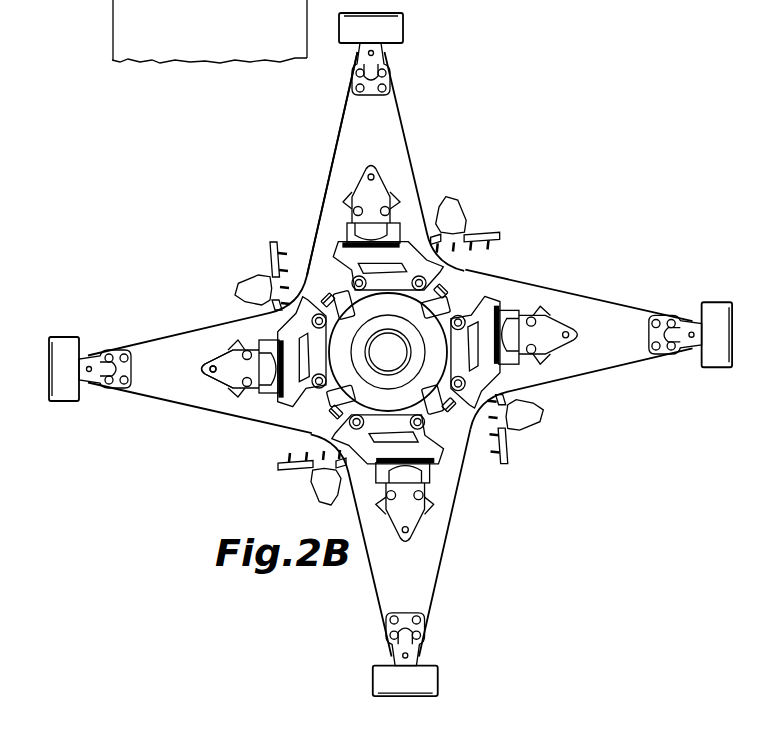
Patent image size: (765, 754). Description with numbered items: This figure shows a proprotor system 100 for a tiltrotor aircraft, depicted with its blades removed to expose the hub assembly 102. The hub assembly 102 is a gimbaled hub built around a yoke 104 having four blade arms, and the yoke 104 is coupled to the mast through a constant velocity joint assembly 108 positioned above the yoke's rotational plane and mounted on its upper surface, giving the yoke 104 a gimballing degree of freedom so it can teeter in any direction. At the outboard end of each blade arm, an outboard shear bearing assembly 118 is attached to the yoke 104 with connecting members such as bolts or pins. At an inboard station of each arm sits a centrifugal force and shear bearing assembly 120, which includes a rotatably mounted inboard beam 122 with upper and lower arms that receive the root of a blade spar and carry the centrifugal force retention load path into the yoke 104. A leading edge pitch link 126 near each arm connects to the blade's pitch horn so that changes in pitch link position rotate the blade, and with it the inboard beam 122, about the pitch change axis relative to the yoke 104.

The proprotor system 100 is at (588, 171).
The hub assembly 102 is at (422, 155).
The yoke 104 is at (340, 161).
The constant velocity joint assembly 108 is at (462, 291).
The outboard shear bearing assembly 118 is at (64, 345).
The centrifugal force and shear bearing assembly 120 is at (214, 396).
The inboard beam 122 is at (222, 357).
The leading edge pitch link 126 is at (238, 298).